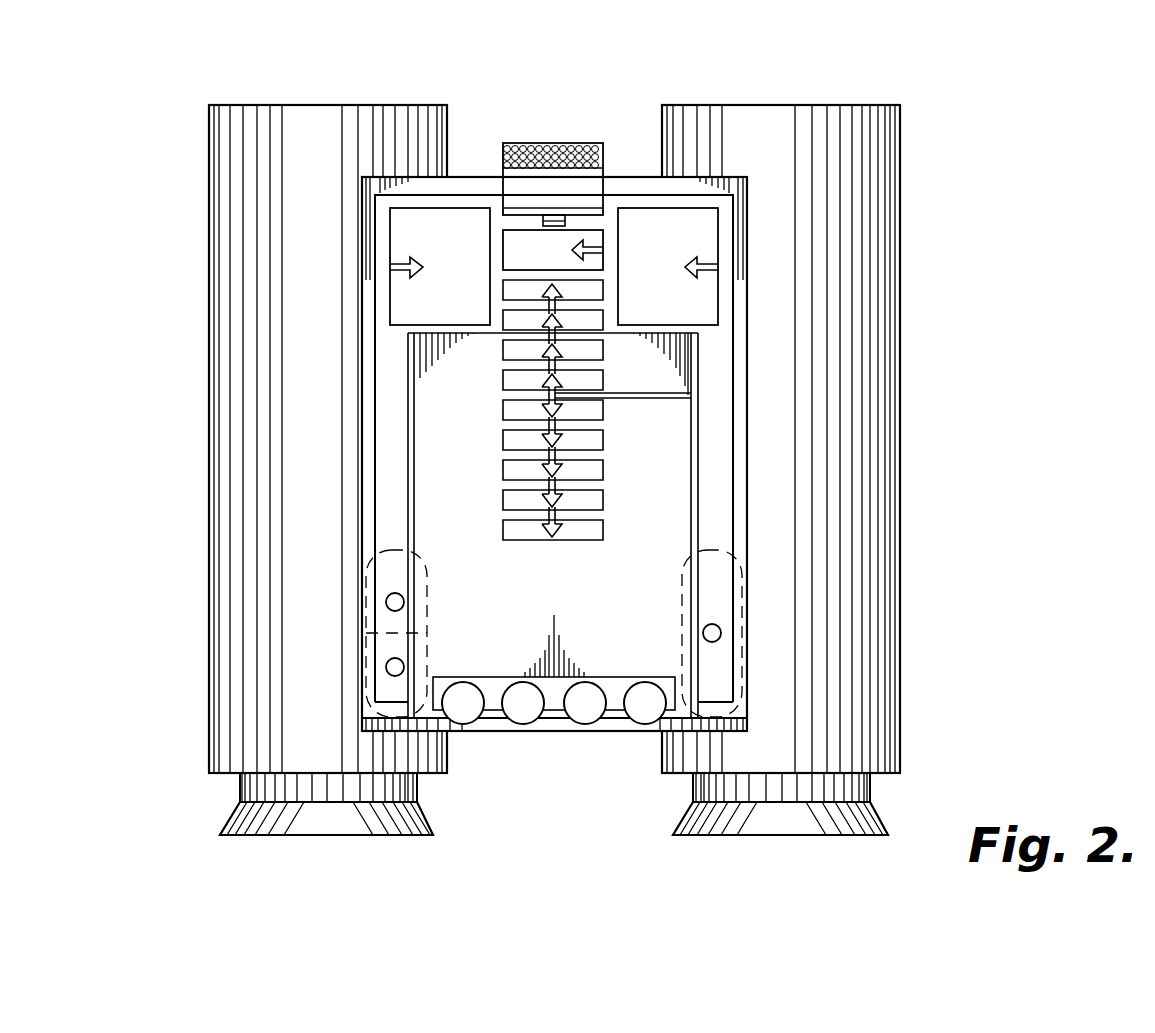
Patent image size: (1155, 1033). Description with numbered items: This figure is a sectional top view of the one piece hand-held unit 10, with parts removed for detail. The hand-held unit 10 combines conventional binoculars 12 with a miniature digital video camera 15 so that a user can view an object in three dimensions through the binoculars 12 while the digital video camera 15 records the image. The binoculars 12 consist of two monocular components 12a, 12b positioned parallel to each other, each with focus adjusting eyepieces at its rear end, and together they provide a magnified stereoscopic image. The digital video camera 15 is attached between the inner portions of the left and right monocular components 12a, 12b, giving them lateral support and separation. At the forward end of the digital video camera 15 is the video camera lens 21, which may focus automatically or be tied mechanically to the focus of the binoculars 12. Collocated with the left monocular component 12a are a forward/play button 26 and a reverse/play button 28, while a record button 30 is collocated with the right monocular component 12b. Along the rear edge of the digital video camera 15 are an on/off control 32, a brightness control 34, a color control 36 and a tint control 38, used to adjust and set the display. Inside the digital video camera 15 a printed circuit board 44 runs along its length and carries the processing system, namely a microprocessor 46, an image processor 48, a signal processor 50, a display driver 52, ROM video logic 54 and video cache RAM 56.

The hand-held unit 10 is at (554, 818).
The binoculars 12 is at (328, 105).
The left monocular component 12a is at (228, 740).
The right monocular component 12b is at (880, 740).
The digital video camera 15 is at (480, 176).
The video camera lens 21 is at (503, 148).
The forward/play button 26 is at (388, 605).
The reverse/play button 28 is at (388, 670).
The record button 30 is at (721, 636).
The on/off control 32 is at (650, 712).
The brightness control 34 is at (592, 712).
The color control 36 is at (530, 712).
The tint control 38 is at (470, 712).
The printed circuit board 44 is at (362, 338).
The microprocessor 46 is at (395, 270).
The image processor 48 is at (597, 188).
The signal processor 50 is at (573, 213).
The display driver 52 is at (597, 248).
The ROM video logic 54 is at (719, 266).
The video cache RAM 56 is at (700, 392).